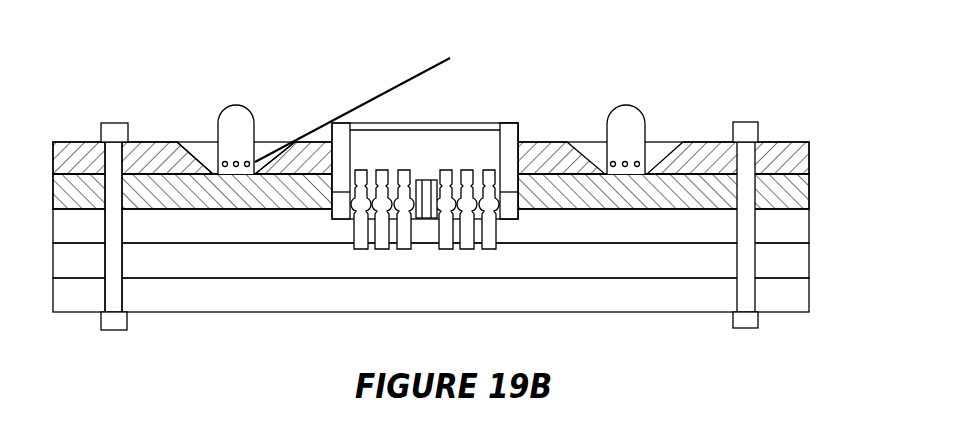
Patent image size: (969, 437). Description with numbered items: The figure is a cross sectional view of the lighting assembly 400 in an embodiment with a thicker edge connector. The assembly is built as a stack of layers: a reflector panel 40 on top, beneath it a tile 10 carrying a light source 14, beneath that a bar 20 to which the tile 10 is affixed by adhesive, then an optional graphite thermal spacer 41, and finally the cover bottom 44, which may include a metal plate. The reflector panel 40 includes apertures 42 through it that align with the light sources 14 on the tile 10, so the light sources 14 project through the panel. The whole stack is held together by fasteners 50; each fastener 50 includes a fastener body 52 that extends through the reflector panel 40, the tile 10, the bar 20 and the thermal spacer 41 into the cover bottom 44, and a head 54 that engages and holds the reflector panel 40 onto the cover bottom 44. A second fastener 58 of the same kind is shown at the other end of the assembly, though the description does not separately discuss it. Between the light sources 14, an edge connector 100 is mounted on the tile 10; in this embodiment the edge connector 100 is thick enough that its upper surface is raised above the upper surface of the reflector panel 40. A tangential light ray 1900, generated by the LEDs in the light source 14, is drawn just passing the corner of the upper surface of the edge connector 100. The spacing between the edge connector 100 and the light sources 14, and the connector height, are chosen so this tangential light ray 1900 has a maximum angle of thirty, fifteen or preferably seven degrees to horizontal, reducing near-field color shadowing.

The tile 10 is at (809, 190).
The light source 14 is at (253, 110).
The bar 20 is at (809, 224).
The reflector panel 40 is at (809, 155).
The thermal spacer 41 is at (809, 258).
The aperture 42 is at (204, 148).
The cover bottom 44 is at (809, 293).
The fastener 50 is at (124, 162).
The fastener body 52 is at (103, 162).
The head 54 is at (115, 123).
The fastener 58 is at (721, 128).
The edge connector 100 is at (400, 123).
The lighting assembly 400 is at (519, 86).
The tangential light ray 1900 is at (358, 100).